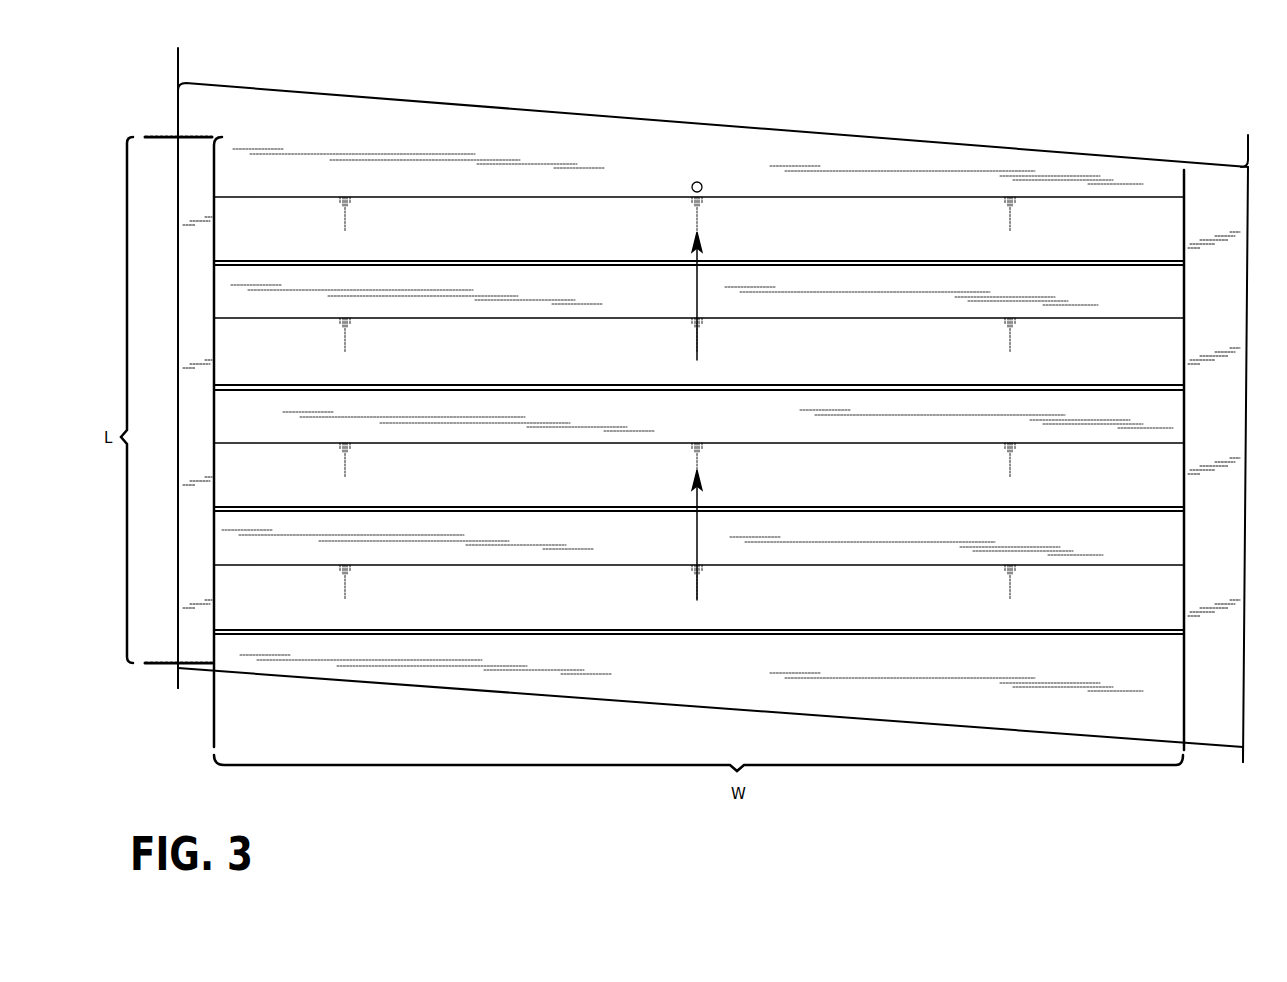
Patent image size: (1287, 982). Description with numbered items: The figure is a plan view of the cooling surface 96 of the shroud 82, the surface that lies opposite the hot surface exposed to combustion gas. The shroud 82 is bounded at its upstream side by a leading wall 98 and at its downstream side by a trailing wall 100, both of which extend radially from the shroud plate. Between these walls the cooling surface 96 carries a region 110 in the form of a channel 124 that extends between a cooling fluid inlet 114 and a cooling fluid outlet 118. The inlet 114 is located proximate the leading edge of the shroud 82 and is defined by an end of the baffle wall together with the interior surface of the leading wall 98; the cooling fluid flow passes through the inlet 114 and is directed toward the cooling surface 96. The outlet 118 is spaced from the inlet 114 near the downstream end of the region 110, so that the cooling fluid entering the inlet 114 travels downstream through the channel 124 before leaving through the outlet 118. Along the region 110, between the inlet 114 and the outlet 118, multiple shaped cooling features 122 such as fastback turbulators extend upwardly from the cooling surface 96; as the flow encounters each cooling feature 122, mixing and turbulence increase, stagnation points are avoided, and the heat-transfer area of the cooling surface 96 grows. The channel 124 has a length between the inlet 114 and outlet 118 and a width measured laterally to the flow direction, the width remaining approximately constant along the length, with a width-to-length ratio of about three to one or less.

The trailing wall 100 is at (204, 85).
The shroud 82 is at (174, 204).
The cooling fluid outlet 118 is at (700, 183).
The shaped cooling feature 122 is at (1150, 270).
The cooling surface 96 is at (1150, 297).
The channel 124 is at (1165, 456).
The leading wall 98 is at (1190, 742).
The region 110 is at (698, 430).
The cooling fluid inlet 114 is at (712, 686).